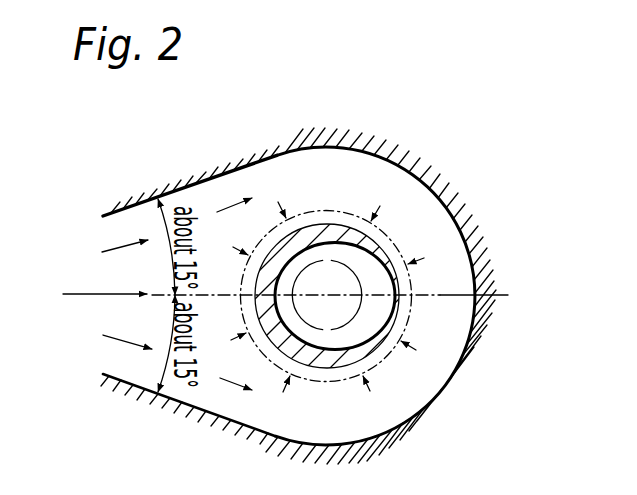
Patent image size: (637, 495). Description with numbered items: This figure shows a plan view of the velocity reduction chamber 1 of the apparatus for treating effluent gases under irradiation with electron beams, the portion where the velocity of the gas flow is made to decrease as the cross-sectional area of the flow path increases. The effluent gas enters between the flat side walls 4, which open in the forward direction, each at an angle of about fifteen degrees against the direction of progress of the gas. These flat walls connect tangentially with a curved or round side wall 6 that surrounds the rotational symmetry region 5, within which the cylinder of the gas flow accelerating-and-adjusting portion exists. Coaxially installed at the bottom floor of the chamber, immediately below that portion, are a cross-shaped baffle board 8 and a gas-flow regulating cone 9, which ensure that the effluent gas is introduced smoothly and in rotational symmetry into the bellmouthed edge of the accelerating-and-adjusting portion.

The velocity reduction chamber 1 is at (133, 273).
The flat side walls 4 is at (197, 181).
The rotational symmetry region 5 is at (397, 247).
The curved side wall 6 is at (428, 167).
The cross-shaped baffle board 8 is at (455, 297).
The gas-flow regulating cone 9 is at (352, 322).